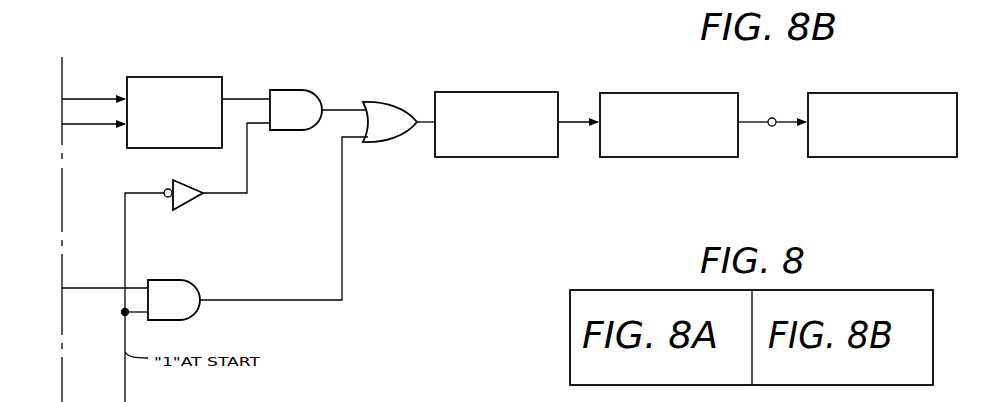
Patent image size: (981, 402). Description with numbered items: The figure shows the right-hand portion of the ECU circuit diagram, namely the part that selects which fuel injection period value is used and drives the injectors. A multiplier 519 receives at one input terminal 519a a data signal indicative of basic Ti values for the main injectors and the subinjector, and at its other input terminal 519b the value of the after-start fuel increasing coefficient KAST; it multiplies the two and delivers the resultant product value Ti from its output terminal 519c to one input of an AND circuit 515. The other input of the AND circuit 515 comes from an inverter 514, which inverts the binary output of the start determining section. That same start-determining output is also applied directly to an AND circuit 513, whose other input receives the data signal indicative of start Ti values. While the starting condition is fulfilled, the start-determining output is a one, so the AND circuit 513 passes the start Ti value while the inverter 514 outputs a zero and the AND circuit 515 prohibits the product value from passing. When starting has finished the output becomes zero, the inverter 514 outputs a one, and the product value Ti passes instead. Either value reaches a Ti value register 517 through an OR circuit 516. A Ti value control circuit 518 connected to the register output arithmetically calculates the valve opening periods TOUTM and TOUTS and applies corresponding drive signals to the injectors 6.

The injectors 6 is at (842, 92).
The AND circuit 513 is at (180, 277).
The inverter 514 is at (186, 206).
The AND circuit 515 is at (305, 85).
The OR circuit 516 is at (382, 98).
The Ti value register 517 is at (488, 91).
The Ti value control circuit 518 is at (638, 92).
The multiplier 519 is at (163, 75).
The input terminal 519a is at (125, 98).
The input terminal 519b is at (123, 130).
The output terminal 519c is at (225, 93).